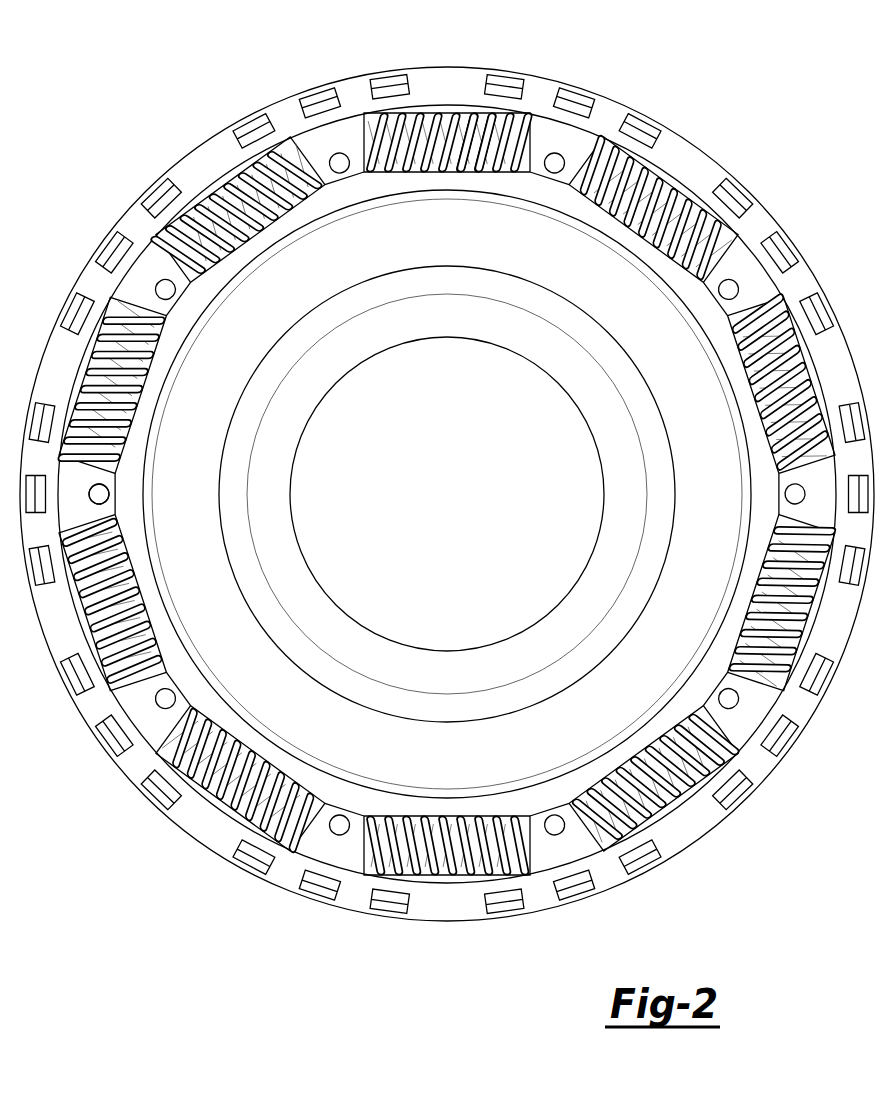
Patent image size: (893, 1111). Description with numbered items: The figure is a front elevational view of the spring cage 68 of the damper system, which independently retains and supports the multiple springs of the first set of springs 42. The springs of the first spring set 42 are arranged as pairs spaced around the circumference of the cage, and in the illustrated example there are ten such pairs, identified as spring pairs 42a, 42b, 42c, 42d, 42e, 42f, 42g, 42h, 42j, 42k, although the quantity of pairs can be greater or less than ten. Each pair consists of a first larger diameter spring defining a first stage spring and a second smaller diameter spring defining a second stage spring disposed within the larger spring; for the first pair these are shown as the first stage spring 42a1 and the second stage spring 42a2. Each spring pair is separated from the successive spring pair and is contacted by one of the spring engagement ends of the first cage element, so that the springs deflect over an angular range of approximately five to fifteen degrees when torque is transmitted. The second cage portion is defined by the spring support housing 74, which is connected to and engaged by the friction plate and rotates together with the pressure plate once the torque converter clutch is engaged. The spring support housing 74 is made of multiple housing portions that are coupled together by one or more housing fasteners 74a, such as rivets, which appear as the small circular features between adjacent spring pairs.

The first spring cage 68 is at (738, 62).
The first set of springs 42 is at (642, 258).
The spring pair 42a is at (444, 188).
The first stage spring 42a1 is at (416, 174).
The second stage spring 42a2 is at (462, 160).
The spring pair 42b is at (644, 228).
The spring pair 42c is at (758, 398).
The spring pair 42d is at (758, 580).
The spring pair 42e is at (652, 748).
The spring pair 42f is at (463, 814).
The spring pair 42g is at (265, 765).
The spring pair 42h is at (143, 605).
The spring pair 42j is at (140, 386).
The spring pair 42k is at (238, 232).
The spring support housing 74 is at (446, 268).
The housing fastener 74a is at (110, 494).